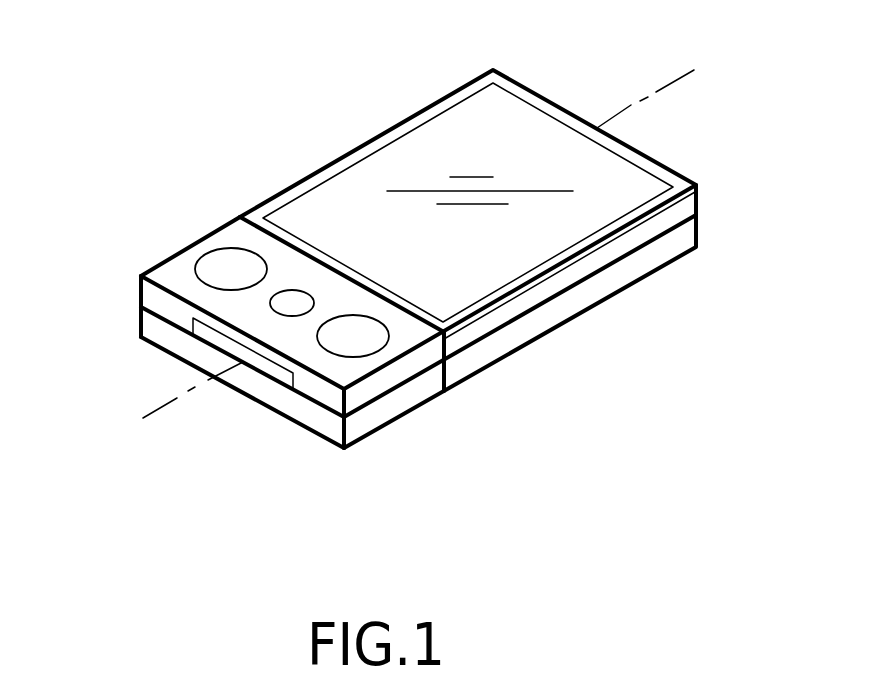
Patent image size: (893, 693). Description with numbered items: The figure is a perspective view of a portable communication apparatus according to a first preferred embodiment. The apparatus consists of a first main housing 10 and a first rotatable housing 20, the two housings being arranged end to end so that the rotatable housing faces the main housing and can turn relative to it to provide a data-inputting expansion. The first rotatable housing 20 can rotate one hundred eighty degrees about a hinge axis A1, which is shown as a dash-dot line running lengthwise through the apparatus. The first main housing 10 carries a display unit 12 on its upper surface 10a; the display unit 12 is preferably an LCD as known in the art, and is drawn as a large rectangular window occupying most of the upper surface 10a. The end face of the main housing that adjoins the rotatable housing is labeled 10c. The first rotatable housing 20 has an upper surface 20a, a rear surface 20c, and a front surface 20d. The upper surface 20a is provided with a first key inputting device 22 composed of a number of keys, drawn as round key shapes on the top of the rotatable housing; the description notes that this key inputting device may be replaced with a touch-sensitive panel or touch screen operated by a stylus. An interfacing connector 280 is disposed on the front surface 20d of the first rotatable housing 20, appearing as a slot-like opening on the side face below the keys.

The first main housing 10 is at (586, 309).
The upper surface 10a is at (657, 167).
The front end surface of upper housing 10c is at (420, 306).
The display unit 12 is at (507, 120).
The first rotatable housing 20 is at (365, 433).
The upper surface 20a is at (312, 358).
The rear surface 20c is at (418, 341).
The front surface 20d is at (147, 326).
The first key inputting device 22 is at (218, 267).
The interfacing connector 280 is at (253, 363).
The hinge axis A1 is at (144, 418).